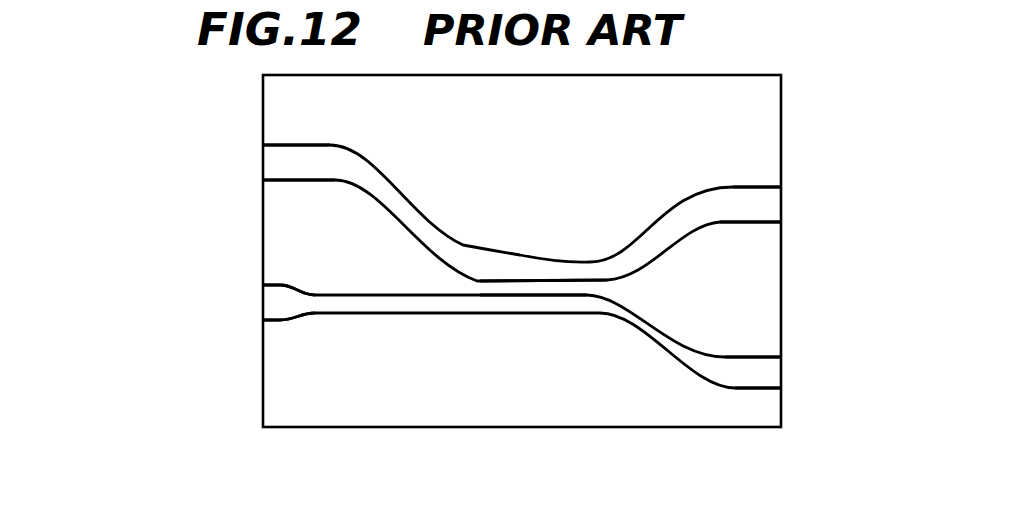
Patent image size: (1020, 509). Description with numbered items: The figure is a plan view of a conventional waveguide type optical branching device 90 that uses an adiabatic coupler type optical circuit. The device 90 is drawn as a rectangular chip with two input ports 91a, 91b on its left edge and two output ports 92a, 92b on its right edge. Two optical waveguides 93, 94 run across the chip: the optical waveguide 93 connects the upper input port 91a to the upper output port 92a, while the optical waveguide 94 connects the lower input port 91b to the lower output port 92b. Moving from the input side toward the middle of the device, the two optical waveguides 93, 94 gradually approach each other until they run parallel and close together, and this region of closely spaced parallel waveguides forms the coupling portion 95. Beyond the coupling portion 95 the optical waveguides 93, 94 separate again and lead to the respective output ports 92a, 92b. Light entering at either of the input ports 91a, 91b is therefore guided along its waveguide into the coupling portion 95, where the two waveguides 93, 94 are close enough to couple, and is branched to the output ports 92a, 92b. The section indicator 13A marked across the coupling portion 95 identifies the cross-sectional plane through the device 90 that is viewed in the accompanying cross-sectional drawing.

The waveguide type optical branching device 90 is at (806, 66).
The input port 91a is at (263, 162).
The input port 91b is at (263, 311).
The output port 92a is at (782, 202).
The output port 92b is at (782, 370).
The optical waveguide 93 is at (368, 180).
The optical waveguide 94 is at (343, 302).
The coupling portion 95 is at (560, 287).
The section line 13A is at (492, 218).